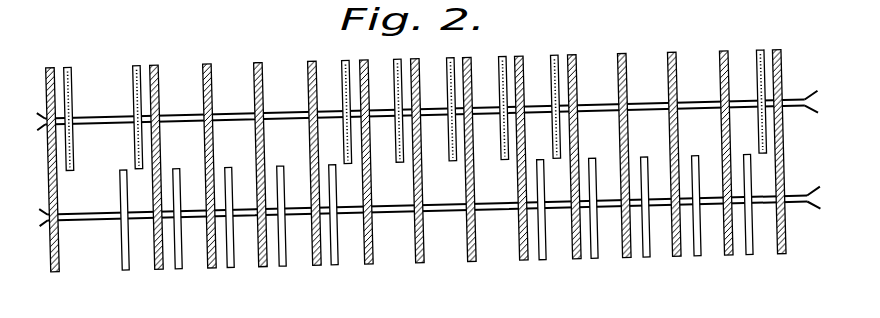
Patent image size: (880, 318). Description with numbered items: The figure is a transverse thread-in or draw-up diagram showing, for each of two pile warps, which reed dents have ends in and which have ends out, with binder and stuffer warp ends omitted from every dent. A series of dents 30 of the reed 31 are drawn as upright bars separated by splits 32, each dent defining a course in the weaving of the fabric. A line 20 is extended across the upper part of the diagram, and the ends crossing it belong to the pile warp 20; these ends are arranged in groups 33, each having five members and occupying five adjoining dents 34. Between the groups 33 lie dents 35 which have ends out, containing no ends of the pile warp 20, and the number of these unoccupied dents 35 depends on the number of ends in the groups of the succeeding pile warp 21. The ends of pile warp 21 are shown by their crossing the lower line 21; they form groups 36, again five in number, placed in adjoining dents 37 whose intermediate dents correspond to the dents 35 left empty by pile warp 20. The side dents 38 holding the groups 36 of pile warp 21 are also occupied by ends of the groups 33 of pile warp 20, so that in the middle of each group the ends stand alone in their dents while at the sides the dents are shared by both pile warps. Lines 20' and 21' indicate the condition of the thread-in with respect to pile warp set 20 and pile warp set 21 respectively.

The pile warp set 20 is at (421, 109).
The thread-in condition line 20' is at (809, 95).
The pile warp set 21 is at (423, 223).
The thread-in condition line 21' is at (819, 193).
The dent 30 is at (74, 130).
The reed 31 is at (572, 56).
The split 32 is at (50, 68).
The group of ends 33 is at (85, 50).
The dent occupied by pile warp 20 34 is at (478, 72).
The unoccupied dent 35 is at (699, 58).
The group of ends 36 is at (330, 287).
The adjoining dent 37 is at (451, 212).
The side dent 38 is at (450, 212).